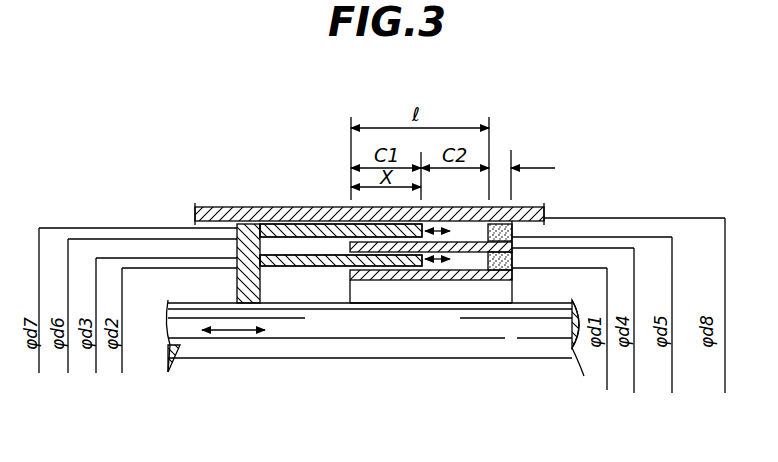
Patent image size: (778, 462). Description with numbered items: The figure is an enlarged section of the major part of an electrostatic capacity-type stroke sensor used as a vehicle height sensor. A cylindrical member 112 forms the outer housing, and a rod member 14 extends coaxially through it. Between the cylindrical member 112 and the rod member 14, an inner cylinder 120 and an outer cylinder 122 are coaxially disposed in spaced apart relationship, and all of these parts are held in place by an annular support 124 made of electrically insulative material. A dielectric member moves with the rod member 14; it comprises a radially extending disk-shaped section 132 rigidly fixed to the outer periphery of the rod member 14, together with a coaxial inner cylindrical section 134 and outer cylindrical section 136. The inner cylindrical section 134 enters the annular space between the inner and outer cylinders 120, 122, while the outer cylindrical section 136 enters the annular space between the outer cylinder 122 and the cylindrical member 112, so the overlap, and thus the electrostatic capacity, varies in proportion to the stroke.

The shaft 14 is at (508, 322).
The cylindrical member 112 is at (224, 208).
The inner cylinder 120 is at (421, 281).
The outer cylinder 122 is at (350, 248).
The annular support 124 is at (514, 210).
The disk-shaped section 132 is at (248, 250).
The inner cylindrical section 134 is at (292, 262).
The outer cylindrical section 136 is at (328, 257).